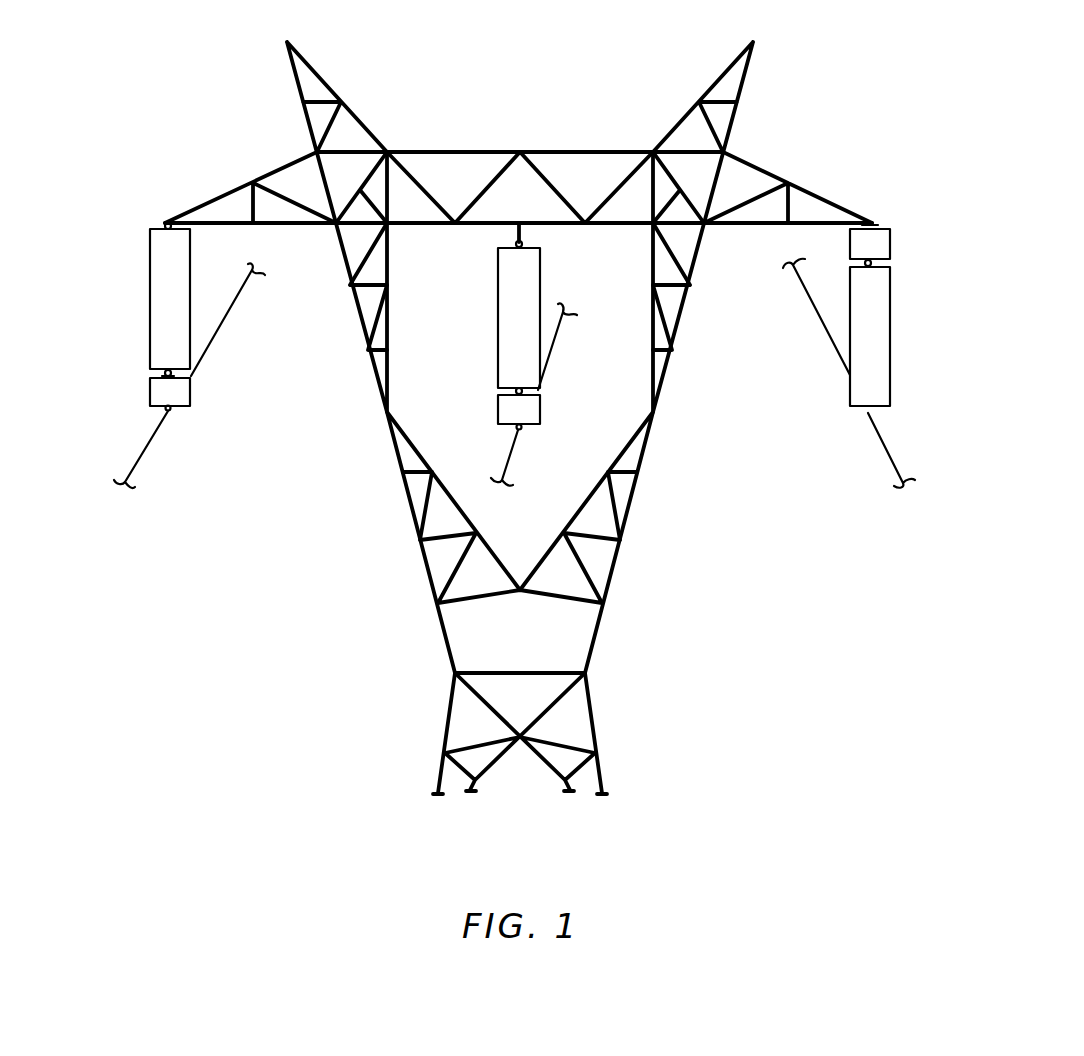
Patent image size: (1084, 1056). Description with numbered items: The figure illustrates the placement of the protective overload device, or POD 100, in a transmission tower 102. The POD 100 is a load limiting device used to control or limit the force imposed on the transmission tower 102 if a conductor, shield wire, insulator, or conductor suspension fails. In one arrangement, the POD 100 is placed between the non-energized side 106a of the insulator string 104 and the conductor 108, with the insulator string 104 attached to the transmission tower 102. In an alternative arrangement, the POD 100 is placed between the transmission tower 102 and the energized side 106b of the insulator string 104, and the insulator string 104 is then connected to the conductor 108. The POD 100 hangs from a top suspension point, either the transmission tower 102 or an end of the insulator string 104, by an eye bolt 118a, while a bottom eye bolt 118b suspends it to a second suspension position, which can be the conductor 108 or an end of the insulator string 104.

The protective overload device (POD) 100 is at (191, 390).
The transmission tower 102 is at (472, 151).
The insulator string 104 is at (191, 258).
The non-energized side of the insulator string 106a is at (162, 373).
The energized side of the insulator string 106b is at (885, 266).
The conductor 108 is at (227, 321).
The eye bolt 118a is at (167, 379).
The bottom eye bolt 118b is at (171, 410).